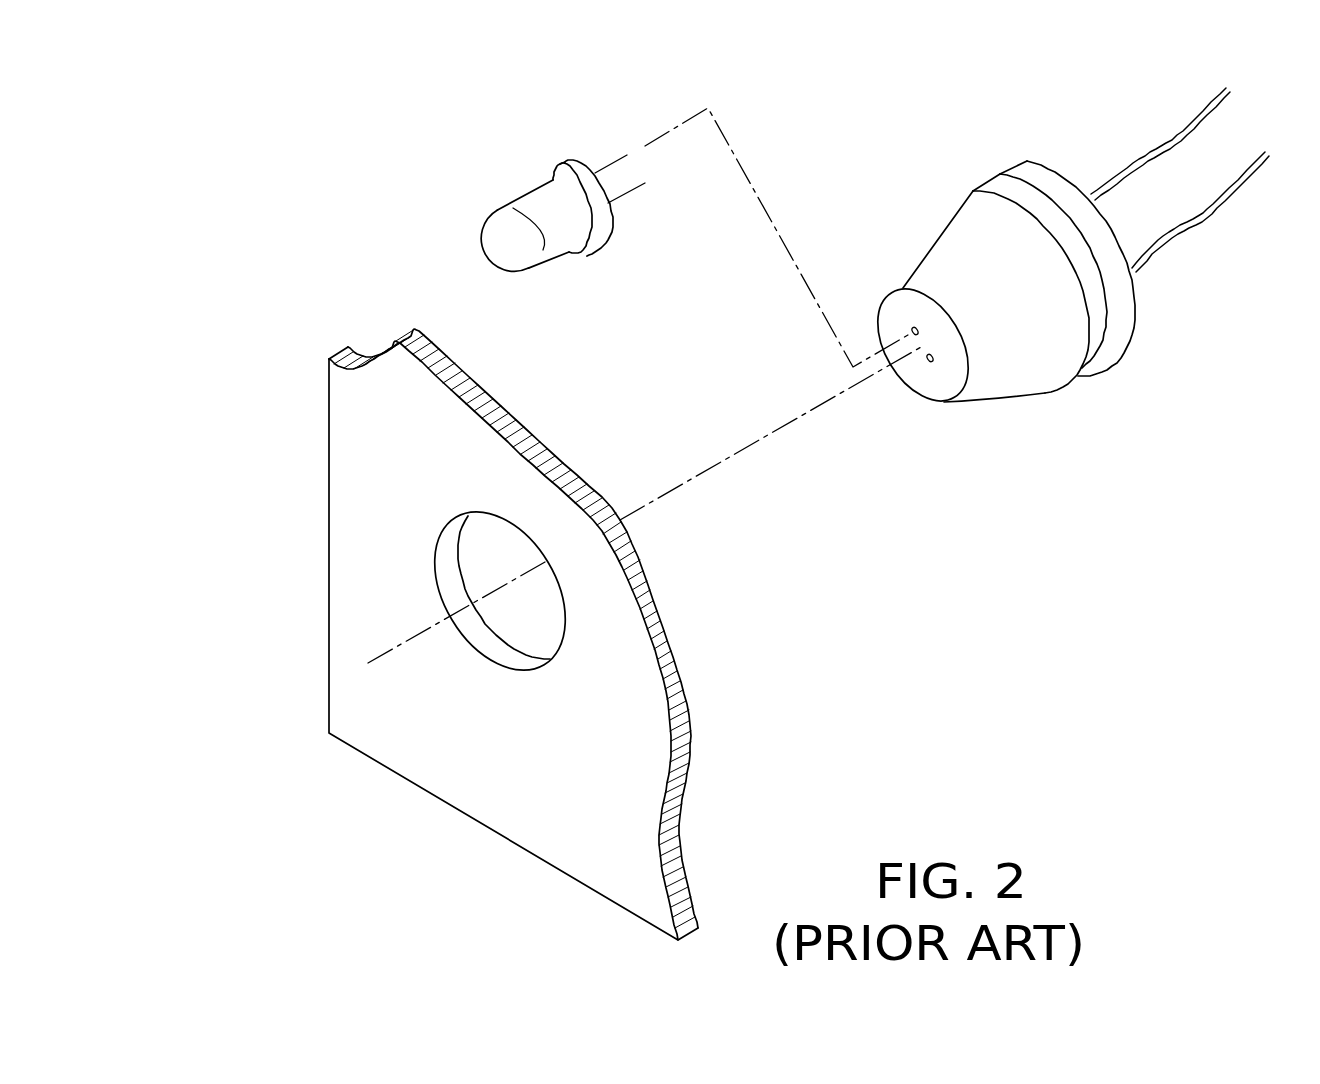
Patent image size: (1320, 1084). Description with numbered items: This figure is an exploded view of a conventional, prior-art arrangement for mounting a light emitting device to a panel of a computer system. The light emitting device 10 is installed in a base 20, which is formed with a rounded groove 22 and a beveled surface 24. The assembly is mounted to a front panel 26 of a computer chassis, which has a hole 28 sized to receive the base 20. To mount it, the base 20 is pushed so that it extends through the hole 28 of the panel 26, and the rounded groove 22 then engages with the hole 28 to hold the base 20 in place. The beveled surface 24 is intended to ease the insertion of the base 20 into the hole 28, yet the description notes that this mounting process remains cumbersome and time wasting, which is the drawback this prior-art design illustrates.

The light emitting device 10 is at (552, 217).
The base 20 is at (1064, 274).
The rounded groove 22 is at (1105, 333).
The beveled surface 24 is at (1003, 323).
The front panel 26 is at (462, 634).
The hole 28 is at (487, 563).